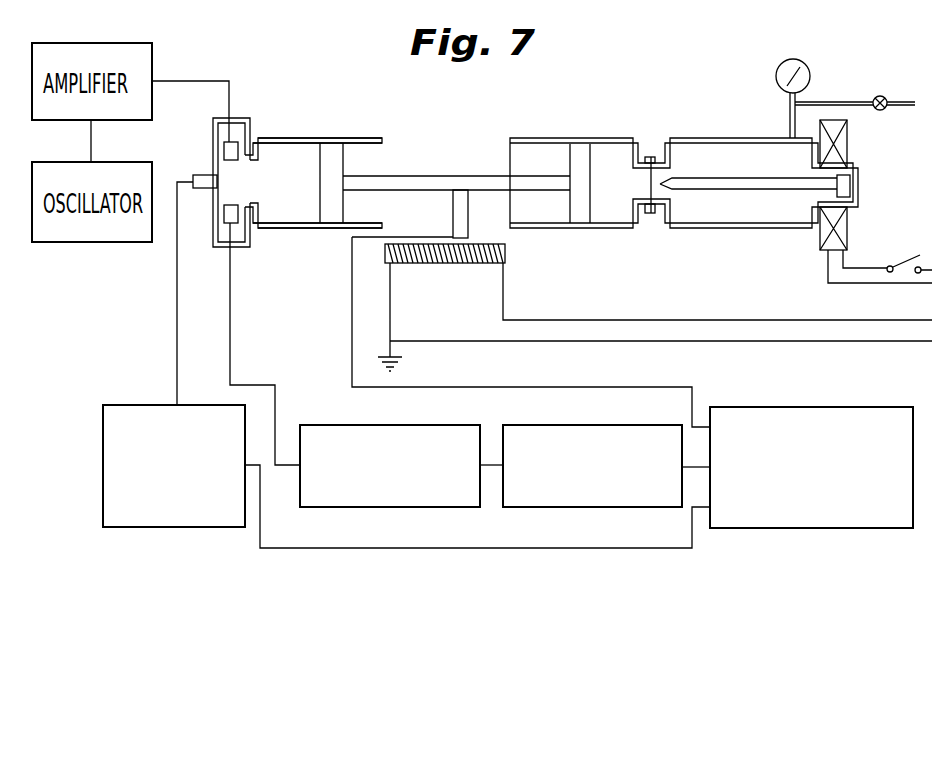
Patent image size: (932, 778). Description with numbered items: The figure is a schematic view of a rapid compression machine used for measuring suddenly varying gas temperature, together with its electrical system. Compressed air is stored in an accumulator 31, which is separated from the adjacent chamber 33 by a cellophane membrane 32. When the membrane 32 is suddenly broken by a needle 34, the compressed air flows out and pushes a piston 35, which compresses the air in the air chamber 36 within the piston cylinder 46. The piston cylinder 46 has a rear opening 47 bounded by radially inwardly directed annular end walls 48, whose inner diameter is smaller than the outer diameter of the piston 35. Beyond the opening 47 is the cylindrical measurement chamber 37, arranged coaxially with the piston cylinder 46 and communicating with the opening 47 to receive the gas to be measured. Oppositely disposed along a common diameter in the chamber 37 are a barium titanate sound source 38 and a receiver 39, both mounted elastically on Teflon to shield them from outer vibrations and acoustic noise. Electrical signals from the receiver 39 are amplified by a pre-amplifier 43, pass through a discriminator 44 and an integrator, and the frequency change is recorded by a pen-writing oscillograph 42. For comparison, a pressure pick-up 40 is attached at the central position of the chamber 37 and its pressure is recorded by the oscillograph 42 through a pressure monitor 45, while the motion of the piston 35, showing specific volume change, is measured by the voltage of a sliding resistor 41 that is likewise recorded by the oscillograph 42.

The accumulator 31 is at (716, 157).
The cellophane membrane 32 is at (640, 168).
The chamber 33 is at (599, 160).
The needle 34 is at (741, 183).
The piston 35 is at (335, 150).
The air chamber 36 is at (302, 158).
The cylindrical measurement chamber 37 is at (213, 233).
The sound source 38 is at (233, 141).
The receiver 39 is at (230, 222).
The pressure pick-up 40 is at (202, 176).
The sliding resistor 41 is at (505, 254).
The pen-writing oscillograph 42 is at (811, 467).
The pre-amplifier 43 is at (401, 466).
The discriminator 44 is at (606, 466).
The pressure monitor 45 is at (406, 476).
The piston cylinder 46 is at (313, 226).
The rear opening 47 is at (253, 187).
The annular end walls 48 is at (257, 152).